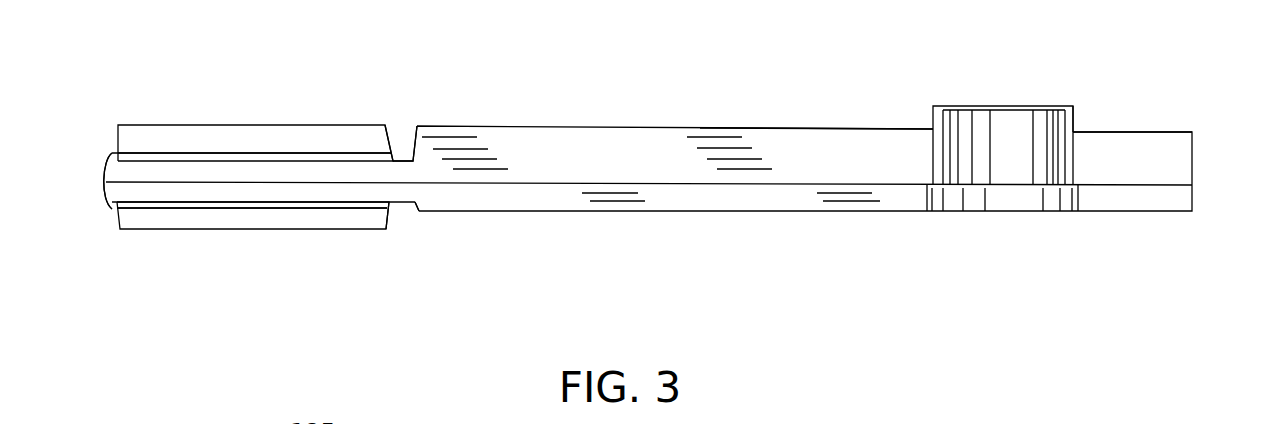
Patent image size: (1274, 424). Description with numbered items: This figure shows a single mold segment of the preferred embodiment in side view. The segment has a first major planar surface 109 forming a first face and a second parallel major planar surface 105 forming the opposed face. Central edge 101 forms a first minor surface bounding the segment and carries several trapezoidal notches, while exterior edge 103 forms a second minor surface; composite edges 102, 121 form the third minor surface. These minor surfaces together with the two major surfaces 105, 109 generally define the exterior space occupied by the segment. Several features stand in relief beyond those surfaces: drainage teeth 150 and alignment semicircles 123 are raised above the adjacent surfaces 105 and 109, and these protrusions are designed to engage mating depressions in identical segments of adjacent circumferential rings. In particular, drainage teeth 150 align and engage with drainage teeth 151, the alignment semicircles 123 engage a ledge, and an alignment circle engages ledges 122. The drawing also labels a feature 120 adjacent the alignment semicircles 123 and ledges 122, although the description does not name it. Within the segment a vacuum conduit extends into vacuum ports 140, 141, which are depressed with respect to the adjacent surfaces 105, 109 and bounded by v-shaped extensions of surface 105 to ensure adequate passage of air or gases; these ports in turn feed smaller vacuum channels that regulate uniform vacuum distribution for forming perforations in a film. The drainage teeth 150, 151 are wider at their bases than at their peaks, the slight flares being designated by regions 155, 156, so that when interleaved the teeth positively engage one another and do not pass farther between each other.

The central edge 101 is at (1192, 168).
The composite edge 102 is at (540, 202).
The exterior edge 103 is at (103, 178).
The second major planar surface 105 is at (797, 211).
The first major planar surface 109 is at (813, 128).
The collar 120 is at (1016, 140).
The composite edge 121 is at (627, 142).
The ledge 122 is at (1070, 192).
The alignment semicircle 123 is at (1072, 115).
The vacuum port 140 is at (405, 202).
The vacuum port 141 is at (407, 160).
The drainage teeth 150 is at (257, 225).
The drainage teeth 151 is at (292, 133).
The region 155 is at (170, 212).
The region 156 is at (175, 153).